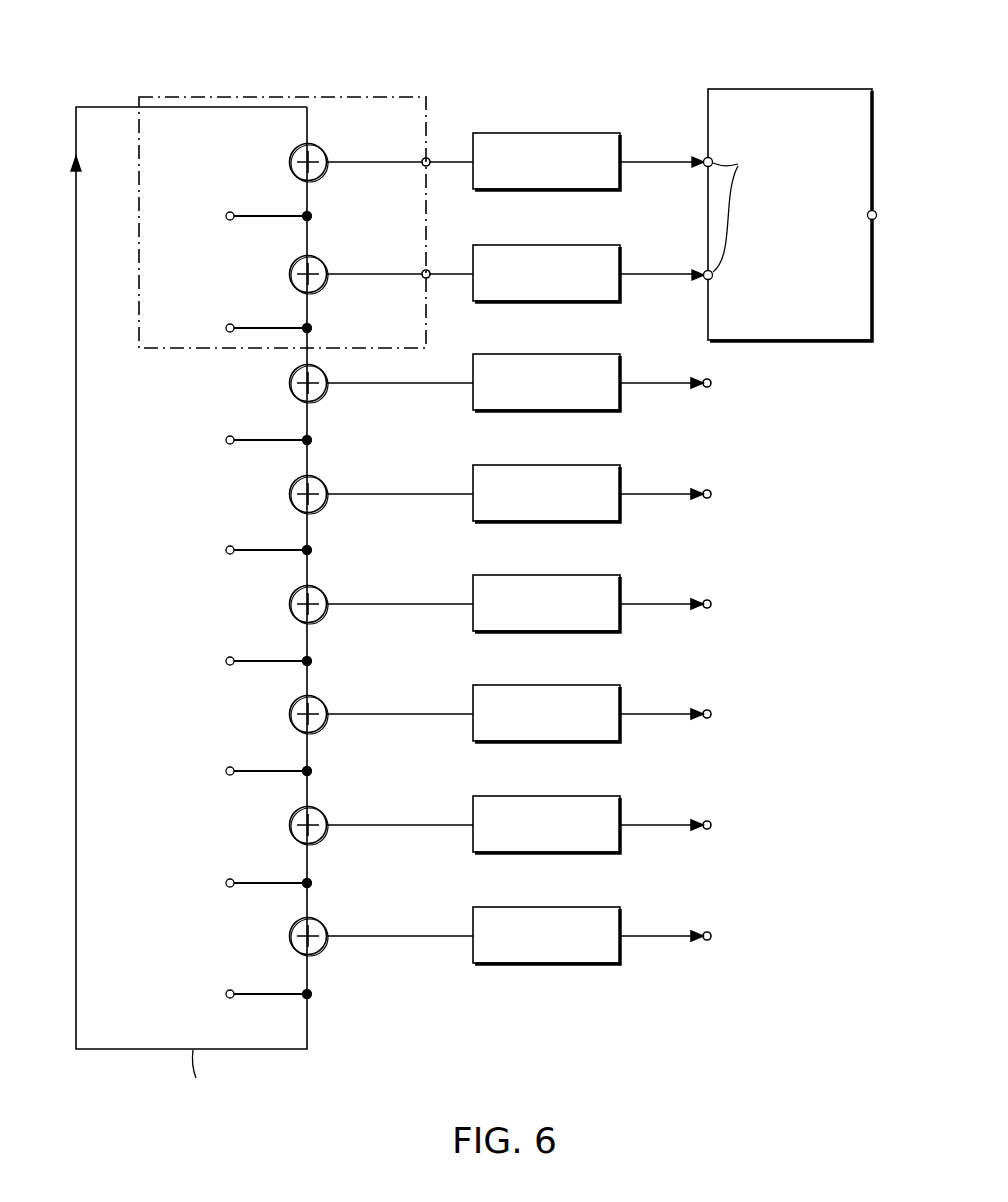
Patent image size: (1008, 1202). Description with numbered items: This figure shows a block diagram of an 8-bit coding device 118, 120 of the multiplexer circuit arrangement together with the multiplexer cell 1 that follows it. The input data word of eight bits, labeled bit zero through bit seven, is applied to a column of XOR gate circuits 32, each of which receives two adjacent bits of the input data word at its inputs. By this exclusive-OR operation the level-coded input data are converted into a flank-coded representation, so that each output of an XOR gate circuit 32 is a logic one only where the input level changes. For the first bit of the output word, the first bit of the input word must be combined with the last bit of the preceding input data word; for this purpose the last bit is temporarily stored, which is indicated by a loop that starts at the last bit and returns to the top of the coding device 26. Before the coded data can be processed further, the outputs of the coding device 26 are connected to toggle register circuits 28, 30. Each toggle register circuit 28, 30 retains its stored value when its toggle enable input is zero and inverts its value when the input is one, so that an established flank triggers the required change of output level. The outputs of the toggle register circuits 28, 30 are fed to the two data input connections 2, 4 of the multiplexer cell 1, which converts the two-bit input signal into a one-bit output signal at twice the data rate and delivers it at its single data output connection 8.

The multiplexer cell 1 is at (761, 175).
The data input connection 2 is at (705, 157).
The data input connection 4 is at (705, 270).
The data output connection 8 is at (868, 220).
The coding device 26 is at (259, 97).
The toggle register circuit 28 is at (588, 161).
The toggle register circuit 30 is at (588, 273).
The XOR gate circuit 32 is at (315, 257).
The 8-bit coding device 118 is at (428, 605).
The 8-bit coding device 120 is at (708, 1017).